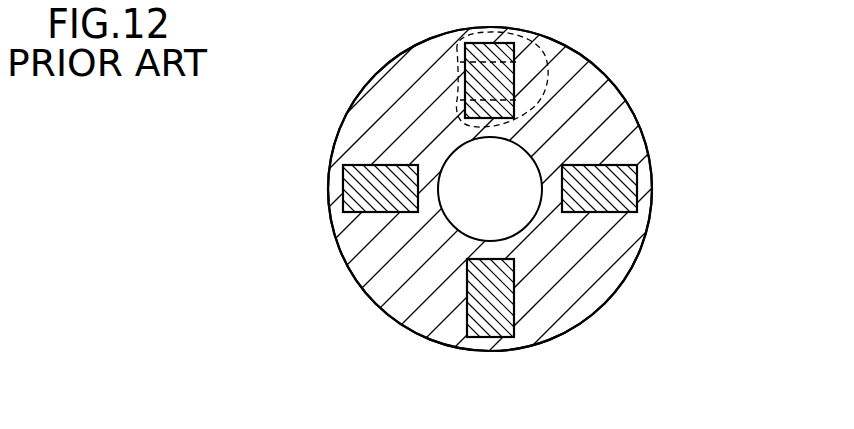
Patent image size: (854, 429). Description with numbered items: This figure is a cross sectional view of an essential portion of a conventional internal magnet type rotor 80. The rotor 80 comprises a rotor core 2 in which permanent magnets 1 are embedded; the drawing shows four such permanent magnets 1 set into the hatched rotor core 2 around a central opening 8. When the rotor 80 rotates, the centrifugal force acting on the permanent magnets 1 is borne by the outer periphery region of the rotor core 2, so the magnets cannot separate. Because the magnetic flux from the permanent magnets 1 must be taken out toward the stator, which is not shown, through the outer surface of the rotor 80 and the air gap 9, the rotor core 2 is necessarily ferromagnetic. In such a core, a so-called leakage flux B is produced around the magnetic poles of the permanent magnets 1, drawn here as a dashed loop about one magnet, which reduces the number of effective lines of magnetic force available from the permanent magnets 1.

The internal magnet type rotor 80 is at (610, 63).
The permanent magnet 1 is at (582, 212).
The rotor core 2 is at (562, 335).
The shaft hole 8 is at (458, 224).
The air gap 9 is at (653, 252).
The leakage flux B is at (512, 79).